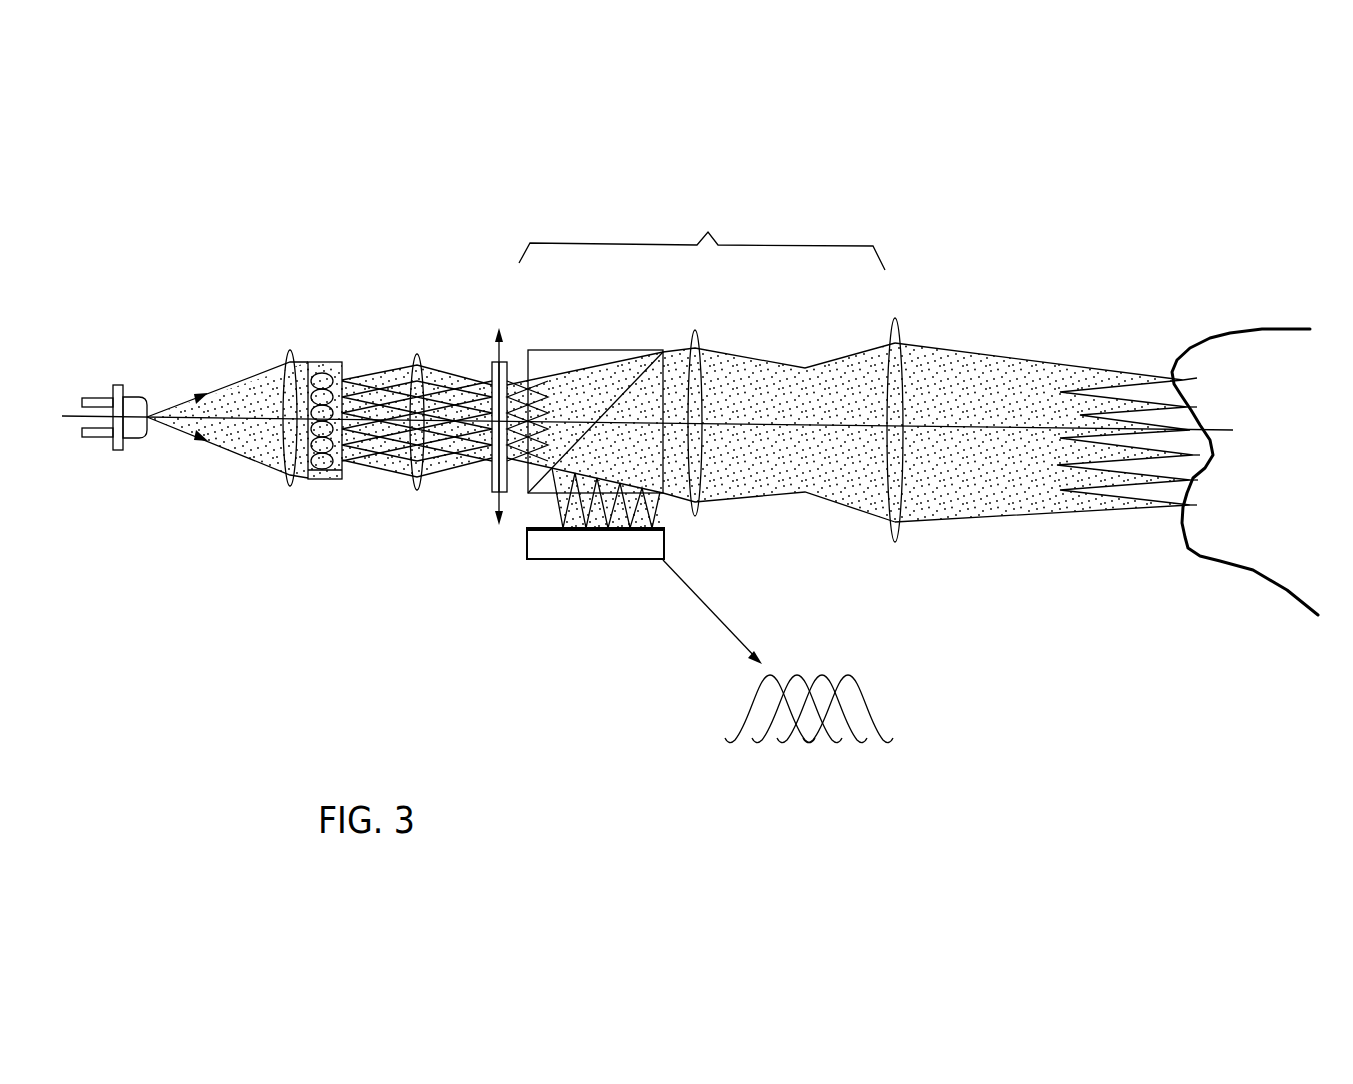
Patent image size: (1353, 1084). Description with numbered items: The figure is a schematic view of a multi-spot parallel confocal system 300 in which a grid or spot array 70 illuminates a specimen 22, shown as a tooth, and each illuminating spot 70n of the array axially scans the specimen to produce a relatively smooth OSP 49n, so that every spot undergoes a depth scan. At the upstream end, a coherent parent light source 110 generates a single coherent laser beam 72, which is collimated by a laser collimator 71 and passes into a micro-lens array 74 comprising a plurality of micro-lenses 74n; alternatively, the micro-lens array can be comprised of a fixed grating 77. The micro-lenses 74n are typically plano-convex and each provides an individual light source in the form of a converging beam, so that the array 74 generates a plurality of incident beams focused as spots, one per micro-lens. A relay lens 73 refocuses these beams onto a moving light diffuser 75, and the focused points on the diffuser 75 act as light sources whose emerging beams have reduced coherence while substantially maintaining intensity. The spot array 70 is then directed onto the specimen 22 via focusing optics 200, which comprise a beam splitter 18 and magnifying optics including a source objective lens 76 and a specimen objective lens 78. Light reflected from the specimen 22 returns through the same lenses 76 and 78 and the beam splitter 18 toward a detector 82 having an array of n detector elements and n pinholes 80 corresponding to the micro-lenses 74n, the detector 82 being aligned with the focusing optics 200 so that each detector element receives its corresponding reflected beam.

The multi-spot parallel confocal system 300 is at (1156, 255).
The focusing optics 200 is at (702, 233).
The coherent parent light source 110 is at (140, 397).
The laser beam 72 is at (223, 383).
The laser collimator 71 is at (291, 488).
The micro-lens array 74 is at (324, 362).
The micro-lenses 74n is at (333, 403).
The fixed grating 77 is at (320, 472).
The relay lens 73 is at (414, 490).
The moving light diffuser 75 is at (492, 368).
The beam splitter 18 is at (590, 360).
The source objective lens 76 is at (700, 345).
The specimen objective lens 78 is at (906, 530).
The pinholes 80 is at (648, 528).
The detector 82 is at (577, 555).
The OSP 49n is at (867, 710).
The spot array 70 is at (1162, 513).
The illuminating spot 70n is at (1140, 405).
The specimen 22 is at (1257, 329).